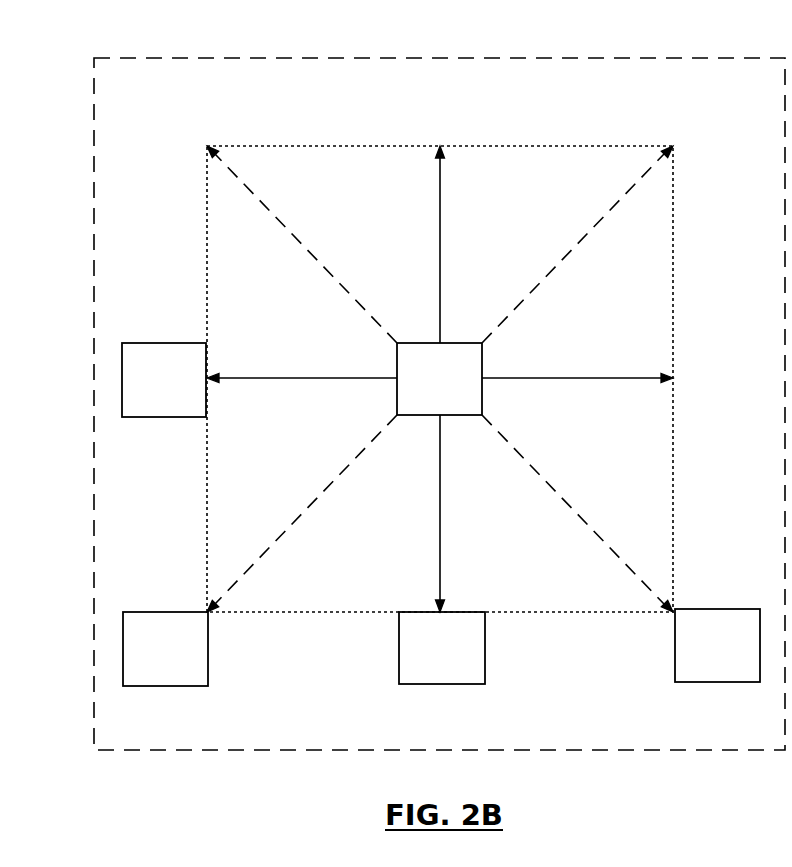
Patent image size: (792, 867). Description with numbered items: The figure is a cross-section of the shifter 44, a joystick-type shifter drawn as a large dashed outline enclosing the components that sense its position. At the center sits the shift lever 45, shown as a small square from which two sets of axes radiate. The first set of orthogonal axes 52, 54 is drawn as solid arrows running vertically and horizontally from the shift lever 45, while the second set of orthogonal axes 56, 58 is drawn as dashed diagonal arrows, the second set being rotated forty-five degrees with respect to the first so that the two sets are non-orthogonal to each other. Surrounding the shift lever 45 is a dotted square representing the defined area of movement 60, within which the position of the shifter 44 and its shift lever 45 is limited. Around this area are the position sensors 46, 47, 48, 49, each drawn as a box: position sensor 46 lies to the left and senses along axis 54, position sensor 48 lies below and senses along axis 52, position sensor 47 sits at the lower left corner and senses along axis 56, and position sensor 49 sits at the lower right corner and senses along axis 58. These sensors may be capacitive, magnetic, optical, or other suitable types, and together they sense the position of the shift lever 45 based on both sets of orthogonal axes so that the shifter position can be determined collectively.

The shifter 44 is at (438, 57).
The defined area of movement 60 is at (324, 146).
The shift lever 45 is at (462, 415).
The position sensor 46 is at (163, 343).
The position sensor 47 is at (165, 612).
The position sensor 48 is at (485, 647).
The position sensor 49 is at (718, 609).
The axis 52 is at (451, 228).
The axis 54 is at (577, 366).
The axis 56 is at (355, 486).
The axis 58 is at (301, 266).